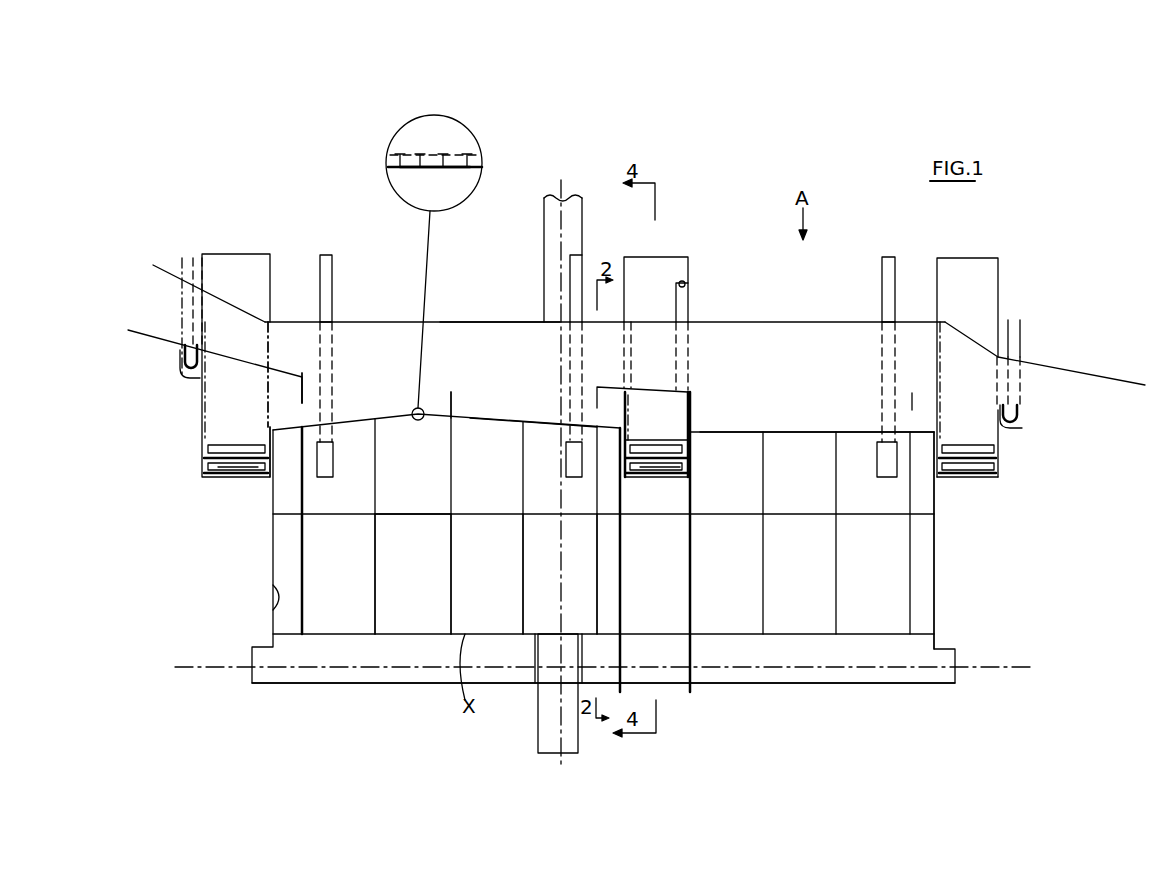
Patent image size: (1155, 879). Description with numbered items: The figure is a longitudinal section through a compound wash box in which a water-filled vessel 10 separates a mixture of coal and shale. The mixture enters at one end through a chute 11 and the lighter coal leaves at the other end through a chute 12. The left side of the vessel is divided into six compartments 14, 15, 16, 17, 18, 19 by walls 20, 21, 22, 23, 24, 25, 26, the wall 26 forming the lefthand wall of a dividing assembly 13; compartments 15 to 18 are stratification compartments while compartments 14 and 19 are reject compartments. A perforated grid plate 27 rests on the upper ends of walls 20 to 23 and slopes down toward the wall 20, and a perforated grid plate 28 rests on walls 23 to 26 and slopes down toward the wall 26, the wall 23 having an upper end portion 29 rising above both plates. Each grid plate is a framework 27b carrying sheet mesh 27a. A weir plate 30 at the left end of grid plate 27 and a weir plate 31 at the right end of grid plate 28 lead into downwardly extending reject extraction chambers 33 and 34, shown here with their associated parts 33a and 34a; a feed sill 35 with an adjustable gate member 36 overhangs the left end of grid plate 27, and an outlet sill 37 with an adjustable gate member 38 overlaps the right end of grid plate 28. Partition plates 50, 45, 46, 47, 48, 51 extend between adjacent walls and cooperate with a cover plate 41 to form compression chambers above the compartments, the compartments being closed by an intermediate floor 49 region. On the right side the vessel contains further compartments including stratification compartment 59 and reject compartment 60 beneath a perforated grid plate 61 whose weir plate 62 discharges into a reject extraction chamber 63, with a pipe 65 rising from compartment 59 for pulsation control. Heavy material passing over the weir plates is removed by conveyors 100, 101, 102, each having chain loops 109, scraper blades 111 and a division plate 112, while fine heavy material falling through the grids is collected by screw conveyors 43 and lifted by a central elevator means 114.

The vessel 10 is at (772, 322).
The chute 11 is at (153, 335).
The chute 12 is at (975, 395).
The dividing assembly 13 is at (661, 365).
The compartment 14 is at (294, 574).
The compartment 15 is at (338, 574).
The compartment 16 is at (413, 574).
The compartment 17 is at (487, 574).
The compartment 18 is at (560, 574).
The compartment 19 is at (616, 574).
The wall 20 is at (272, 592).
The wall 21 is at (304, 600).
The wall 22 is at (377, 600).
The wall 23 is at (453, 602).
The wall 24 is at (524, 604).
The wall 25 is at (597, 602).
The wall 26 is at (622, 606).
The perforated grid plate 27 is at (392, 420).
The sheet mesh 27a is at (410, 160).
The framework 27b is at (430, 168).
The perforated grid plate 28 is at (540, 424).
The upper end portion 29 is at (452, 398).
The weir plate 30 is at (266, 425).
The weir plate 31 is at (627, 430).
The reject extraction chamber 33 is at (212, 418).
The bearing housing tube 33a is at (183, 362).
The reject extraction chamber 34 is at (690, 397).
The guide rod 34a is at (693, 372).
The feed sill 35 is at (285, 372).
The adjustable gate member 36 is at (305, 388).
The outlet sill 37 is at (610, 385).
The adjustable gate member 38 is at (600, 406).
The cover plate 41 is at (507, 322).
The screw conveyor 43 is at (495, 672).
The partition plate 45 is at (346, 478).
The partition plate 46 is at (422, 513).
The partition plate 47 is at (495, 528).
The partition plate 48 is at (562, 478).
The intermediate floor 49 is at (410, 514).
The partition plate 50 is at (294, 530).
The partition plate 51 is at (618, 560).
The compartment 59 is at (885, 533).
The compartment 60 is at (922, 562).
The perforated grid plate 61 is at (790, 432).
The weir plate 62 is at (945, 420).
The reject extraction chamber 63 is at (1030, 420).
The pipe 65 is at (882, 289).
The conveyor 100 is at (218, 482).
The conveyor 101 is at (662, 440).
The conveyor 102 is at (978, 470).
The chain loop 109 is at (630, 449).
The scraper blade 111 is at (690, 446).
The division plate 112 is at (690, 466).
The elevator means 114 is at (544, 212).